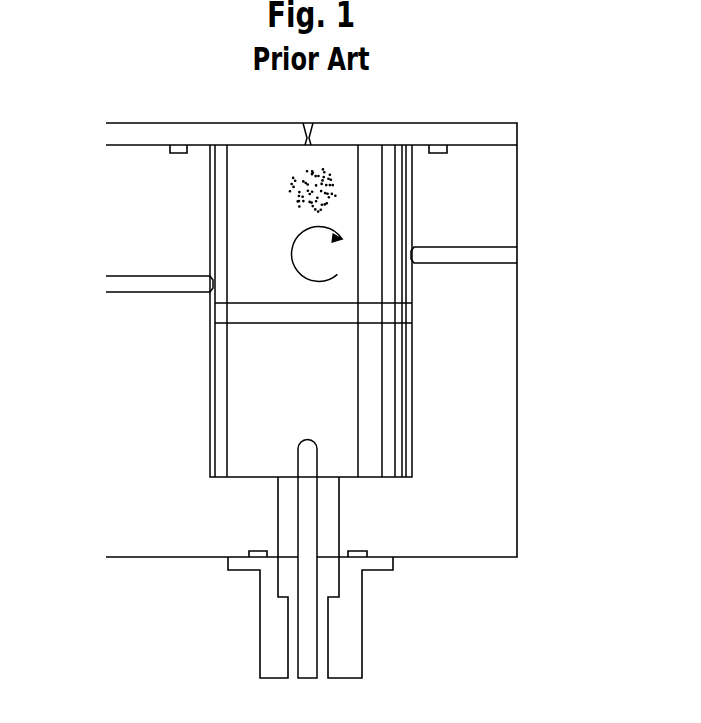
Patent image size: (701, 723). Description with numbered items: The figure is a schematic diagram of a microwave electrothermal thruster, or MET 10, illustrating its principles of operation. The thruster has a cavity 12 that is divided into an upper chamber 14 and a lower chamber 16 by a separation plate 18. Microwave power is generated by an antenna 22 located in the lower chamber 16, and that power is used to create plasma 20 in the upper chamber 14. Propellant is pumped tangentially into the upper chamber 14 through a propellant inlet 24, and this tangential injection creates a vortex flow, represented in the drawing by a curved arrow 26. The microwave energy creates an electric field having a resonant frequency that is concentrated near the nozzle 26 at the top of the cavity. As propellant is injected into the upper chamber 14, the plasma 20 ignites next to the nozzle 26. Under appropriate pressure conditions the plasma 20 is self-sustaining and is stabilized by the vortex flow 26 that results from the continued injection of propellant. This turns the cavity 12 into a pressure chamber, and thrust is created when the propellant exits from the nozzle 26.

The MET 10 is at (543, 181).
The cavity 12 is at (410, 376).
The upper chamber 14 is at (238, 237).
The lower chamber 16 is at (237, 444).
The separation plate 18 is at (220, 310).
The plasma 20 is at (345, 185).
The antenna 22 is at (317, 450).
The propellant inlet 24 is at (102, 287).
The nozzle 26 is at (308, 122).